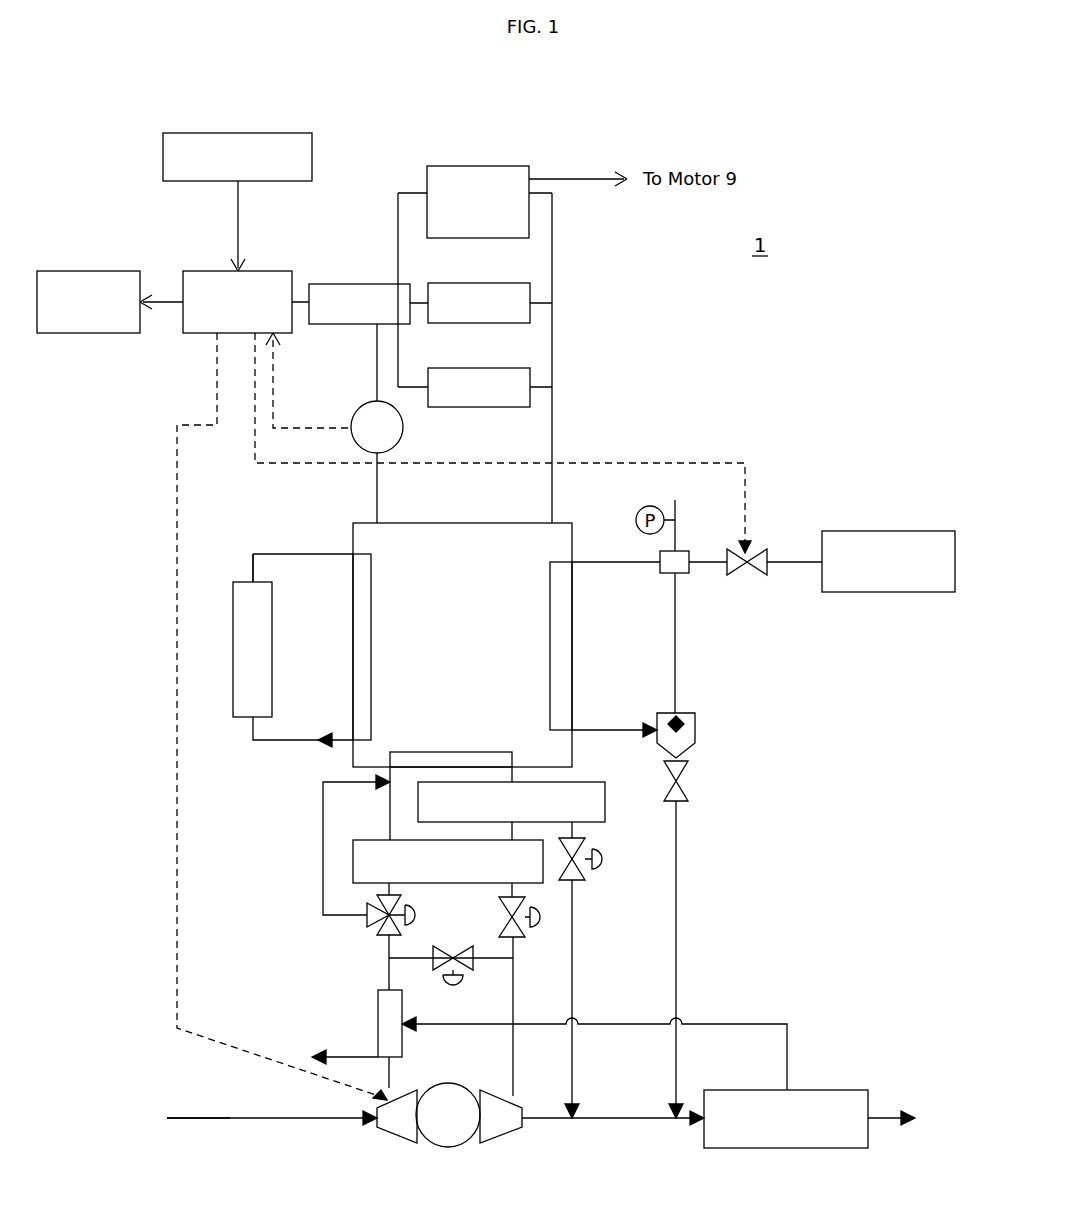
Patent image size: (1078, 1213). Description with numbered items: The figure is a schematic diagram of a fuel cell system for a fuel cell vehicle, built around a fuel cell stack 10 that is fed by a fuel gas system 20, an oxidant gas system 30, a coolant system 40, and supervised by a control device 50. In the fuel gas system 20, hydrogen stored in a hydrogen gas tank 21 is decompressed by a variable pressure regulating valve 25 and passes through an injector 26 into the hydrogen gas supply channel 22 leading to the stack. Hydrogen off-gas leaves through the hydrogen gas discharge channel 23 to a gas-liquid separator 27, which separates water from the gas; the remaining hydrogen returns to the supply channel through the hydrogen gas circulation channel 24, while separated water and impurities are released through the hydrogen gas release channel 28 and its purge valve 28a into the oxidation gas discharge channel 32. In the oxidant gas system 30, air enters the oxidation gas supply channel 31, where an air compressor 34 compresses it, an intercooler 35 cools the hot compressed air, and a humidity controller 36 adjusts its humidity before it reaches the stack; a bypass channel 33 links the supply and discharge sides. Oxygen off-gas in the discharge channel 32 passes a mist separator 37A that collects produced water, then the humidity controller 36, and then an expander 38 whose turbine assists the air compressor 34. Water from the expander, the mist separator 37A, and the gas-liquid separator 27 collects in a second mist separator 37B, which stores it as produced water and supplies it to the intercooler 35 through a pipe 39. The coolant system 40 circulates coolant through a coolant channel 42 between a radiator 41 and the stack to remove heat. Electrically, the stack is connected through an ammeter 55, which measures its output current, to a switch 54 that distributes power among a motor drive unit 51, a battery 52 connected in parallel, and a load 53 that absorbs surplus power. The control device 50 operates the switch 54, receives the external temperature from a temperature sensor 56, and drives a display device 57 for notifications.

The fuel cell stack 10 is at (563, 523).
The fuel gas system 20 is at (777, 521).
The hydrogen gas tank 21 is at (890, 531).
The hydrogen gas supply channel 22 is at (595, 565).
The hydrogen gas discharge channel 23 is at (598, 727).
The hydrogen gas circulation channel 24 is at (677, 680).
The variable pressure regulating valve 25 is at (750, 575).
The injector 26 is at (683, 573).
The gas-liquid separator 27 is at (697, 726).
The hydrogen gas release channel 28 is at (678, 876).
The purge valve 28a is at (683, 781).
The oxidant gas system 30 is at (287, 1124).
The oxidation gas supply channel 31 is at (195, 1125).
The oxidation gas discharge channel 32 is at (516, 998).
The bypass channel 33 is at (487, 960).
The air compressor 34 is at (385, 1132).
The intercooler 35 is at (378, 1005).
The humidity controller 36 is at (353, 861).
The mist separator 37A is at (605, 803).
The mist separator 37B is at (822, 1090).
The expander 38 is at (510, 1142).
The pipe 39 is at (703, 1018).
The coolant system 40 is at (262, 749).
The radiator 41 is at (272, 700).
The coolant channel 42 is at (250, 566).
The control device 50 is at (210, 271).
The motor drive unit 51 is at (520, 166).
The battery 52 is at (520, 283).
The load 53 is at (520, 368).
The switch 54 is at (345, 284).
The ammeter 55 is at (403, 432).
The temperature sensor 56 is at (312, 158).
The display device 57 is at (130, 271).